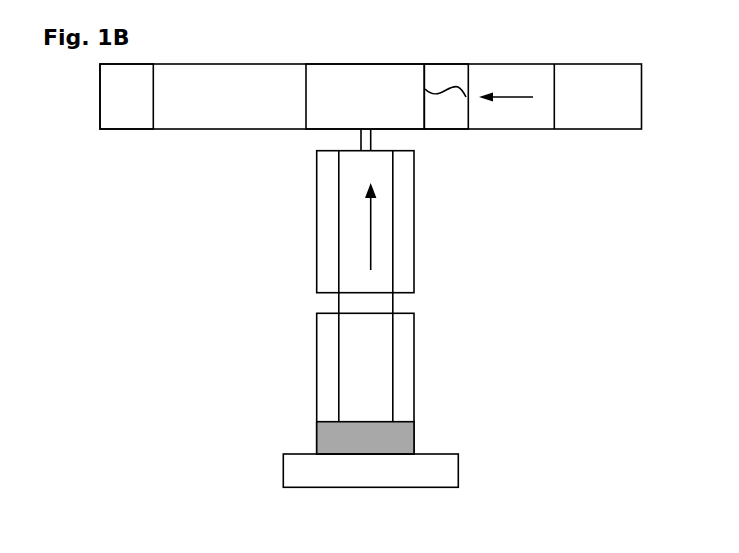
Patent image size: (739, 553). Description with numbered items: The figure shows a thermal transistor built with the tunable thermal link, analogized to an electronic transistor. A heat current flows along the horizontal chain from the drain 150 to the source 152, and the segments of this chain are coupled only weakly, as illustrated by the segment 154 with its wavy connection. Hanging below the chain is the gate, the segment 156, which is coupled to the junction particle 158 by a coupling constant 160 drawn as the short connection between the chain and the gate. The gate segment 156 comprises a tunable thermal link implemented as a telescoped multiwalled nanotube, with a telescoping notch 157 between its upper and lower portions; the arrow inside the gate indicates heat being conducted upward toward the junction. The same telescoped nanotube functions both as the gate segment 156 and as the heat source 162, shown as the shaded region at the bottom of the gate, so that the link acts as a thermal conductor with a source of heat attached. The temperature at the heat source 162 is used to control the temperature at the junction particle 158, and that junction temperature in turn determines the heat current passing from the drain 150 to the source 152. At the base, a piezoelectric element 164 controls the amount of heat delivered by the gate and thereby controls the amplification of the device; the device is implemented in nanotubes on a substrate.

The drain 150 is at (597, 86).
The source 152 is at (132, 107).
The segment 154 is at (447, 75).
The gate segment 156 is at (372, 227).
The telescoping notch 157 is at (395, 303).
The junction particle 158 is at (360, 86).
The coupling constant 160 is at (359, 140).
The heat source 162 is at (403, 433).
The piezoelectric element 164 is at (447, 465).